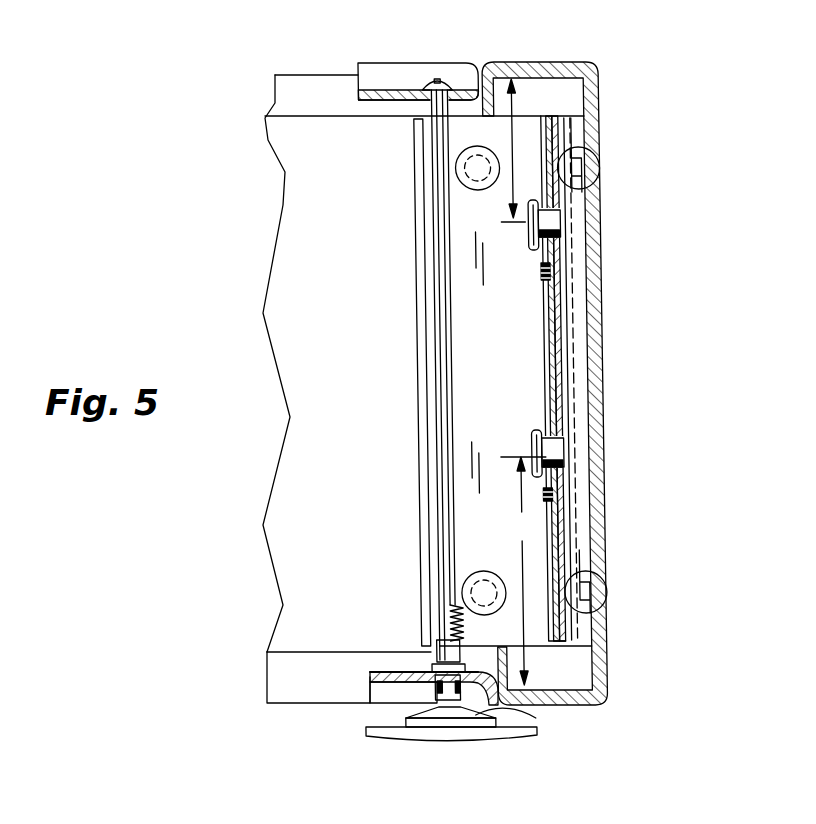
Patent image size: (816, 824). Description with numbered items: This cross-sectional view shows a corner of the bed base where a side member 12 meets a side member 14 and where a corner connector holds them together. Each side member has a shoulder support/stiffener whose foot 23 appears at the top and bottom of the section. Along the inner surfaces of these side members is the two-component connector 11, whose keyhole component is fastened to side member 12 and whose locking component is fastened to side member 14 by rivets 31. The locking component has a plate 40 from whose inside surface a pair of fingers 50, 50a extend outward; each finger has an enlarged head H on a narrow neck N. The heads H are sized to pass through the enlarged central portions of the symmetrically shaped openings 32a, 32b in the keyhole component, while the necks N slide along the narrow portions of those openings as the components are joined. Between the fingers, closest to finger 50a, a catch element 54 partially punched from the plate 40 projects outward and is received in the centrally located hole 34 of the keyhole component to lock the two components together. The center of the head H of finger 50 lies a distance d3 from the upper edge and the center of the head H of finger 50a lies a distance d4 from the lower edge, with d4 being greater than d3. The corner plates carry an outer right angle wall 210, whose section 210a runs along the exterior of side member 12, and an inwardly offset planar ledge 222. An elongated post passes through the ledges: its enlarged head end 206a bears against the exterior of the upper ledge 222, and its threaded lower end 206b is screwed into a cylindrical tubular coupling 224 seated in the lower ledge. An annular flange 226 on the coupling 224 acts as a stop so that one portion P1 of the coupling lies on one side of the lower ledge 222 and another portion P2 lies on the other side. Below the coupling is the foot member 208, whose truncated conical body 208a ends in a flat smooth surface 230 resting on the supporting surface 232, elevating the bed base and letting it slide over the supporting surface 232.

The side member 12 is at (283, 138).
The foot 23 is at (304, 85).
The side member 14 is at (595, 326).
The two-component connector 11 is at (505, 62).
The plate 40 is at (556, 122).
The hole 34 is at (562, 363).
The catch element 54 is at (555, 400).
The enlarged head H is at (558, 205).
The narrow neck N is at (556, 250).
The finger 50 is at (553, 222).
The finger 50a is at (552, 455).
The oblong-type opening 32a is at (556, 262).
The oblong-type opening 32b is at (555, 492).
The rivet 31 is at (488, 573).
The distance d3 is at (500, 150).
The distance d4 is at (525, 571).
The enlarged head end 206a is at (437, 80).
The lower end 206b is at (470, 623).
The cylindrical tubular coupling 224 is at (440, 645).
The portion of coupling P1 is at (433, 672).
The portion of coupling P2 is at (433, 692).
The annular flange 226 is at (370, 684).
The ledge 222 is at (372, 700).
The foot member 208 is at (465, 722).
The body 208a is at (520, 718).
The flat smooth surface 230 is at (437, 725).
The supporting surface 232 is at (530, 718).
The section of outer right angle wall 210a is at (126, 0).
The outer right angle wall 210 is at (193, 12).